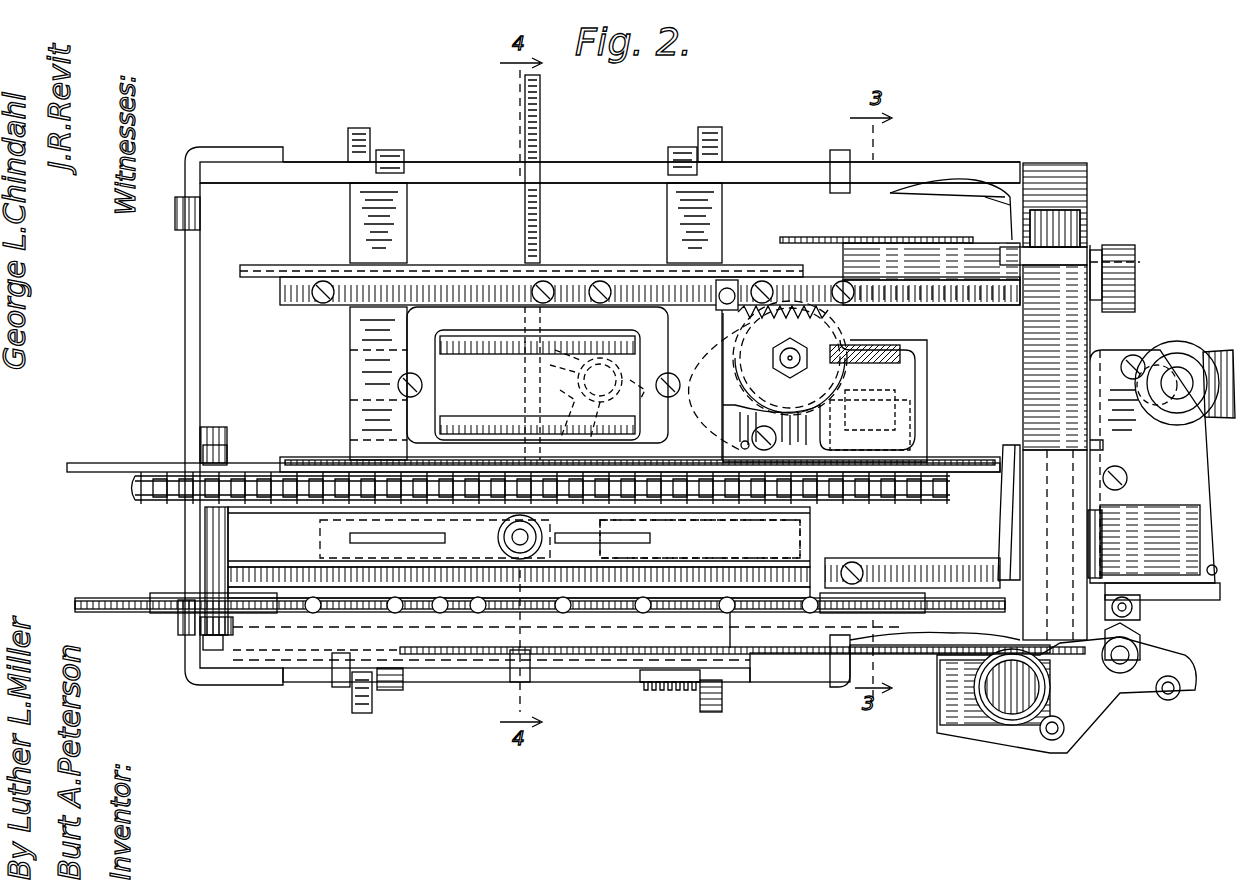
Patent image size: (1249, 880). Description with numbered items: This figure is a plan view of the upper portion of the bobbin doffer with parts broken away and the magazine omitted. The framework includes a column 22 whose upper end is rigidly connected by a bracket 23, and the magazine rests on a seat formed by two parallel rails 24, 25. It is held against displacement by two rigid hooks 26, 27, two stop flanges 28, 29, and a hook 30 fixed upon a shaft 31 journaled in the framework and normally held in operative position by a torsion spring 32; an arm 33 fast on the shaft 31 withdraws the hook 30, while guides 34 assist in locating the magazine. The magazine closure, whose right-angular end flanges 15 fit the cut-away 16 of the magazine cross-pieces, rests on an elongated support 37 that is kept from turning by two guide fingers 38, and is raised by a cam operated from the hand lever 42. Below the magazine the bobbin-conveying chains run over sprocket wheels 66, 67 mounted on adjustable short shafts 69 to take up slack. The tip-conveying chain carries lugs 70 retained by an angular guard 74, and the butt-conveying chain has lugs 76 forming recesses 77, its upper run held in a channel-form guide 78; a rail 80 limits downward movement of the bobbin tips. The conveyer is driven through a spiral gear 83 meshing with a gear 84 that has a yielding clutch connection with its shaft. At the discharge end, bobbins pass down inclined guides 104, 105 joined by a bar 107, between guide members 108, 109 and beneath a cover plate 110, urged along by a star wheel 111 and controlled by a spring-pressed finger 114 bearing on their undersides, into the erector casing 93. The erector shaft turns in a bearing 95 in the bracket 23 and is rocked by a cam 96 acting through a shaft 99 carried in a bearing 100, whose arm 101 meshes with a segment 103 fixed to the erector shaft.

The end flange 15 is at (802, 358).
The cut-away 16 is at (262, 632).
The column 22 is at (1183, 362).
The bracket 23 is at (990, 390).
The rail 24 is at (598, 655).
The rail 25 is at (590, 172).
The rigid hook 26 is at (402, 160).
The rigid hook 27 is at (676, 150).
The stop flange 28 is at (192, 333).
The stop flange 29 is at (838, 160).
The hook 30 is at (518, 667).
The shaft 31 is at (562, 675).
The torsion spring 32 is at (658, 692).
The arm 33 is at (340, 688).
The guide 34 is at (178, 210).
The support 37 is at (262, 537).
The guide finger 38 is at (332, 580).
The hand lever 42 is at (524, 133).
The sprocket wheel 66 is at (135, 484).
The sprocket wheel 67 is at (140, 612).
The short shaft 69 is at (212, 428).
The lug 70 is at (75, 463).
The angular guard 74 is at (312, 457).
The lug 76 is at (735, 612).
The recess 77 is at (447, 612).
The channel-form guide 78 is at (735, 582).
The rail 80 is at (458, 270).
The spiral gear 83 is at (660, 320).
The gear 84 is at (905, 360).
The casing 93 is at (1062, 180).
The bearing 95 is at (1170, 582).
The cam 96 is at (775, 260).
The shaft 99 is at (1137, 275).
The bearing 100 is at (993, 258).
The arm 101 is at (1095, 337).
The segment 103 is at (1150, 520).
The inclined guide 104 is at (987, 298).
The inclined guide 105 is at (968, 560).
The bar 107 is at (1020, 512).
The guide member 108 is at (990, 195).
The guide member 109 is at (912, 658).
The cover plate 110 is at (970, 180).
The star wheel 111 is at (948, 238).
The spring-pressed finger 114 is at (926, 408).